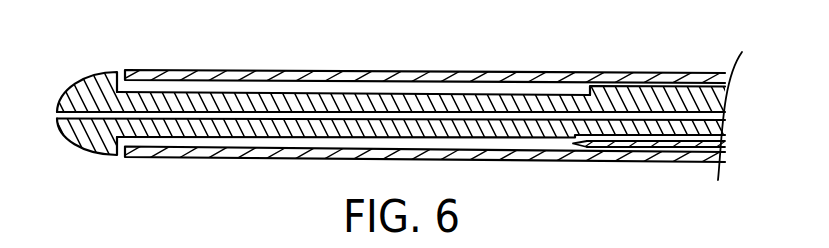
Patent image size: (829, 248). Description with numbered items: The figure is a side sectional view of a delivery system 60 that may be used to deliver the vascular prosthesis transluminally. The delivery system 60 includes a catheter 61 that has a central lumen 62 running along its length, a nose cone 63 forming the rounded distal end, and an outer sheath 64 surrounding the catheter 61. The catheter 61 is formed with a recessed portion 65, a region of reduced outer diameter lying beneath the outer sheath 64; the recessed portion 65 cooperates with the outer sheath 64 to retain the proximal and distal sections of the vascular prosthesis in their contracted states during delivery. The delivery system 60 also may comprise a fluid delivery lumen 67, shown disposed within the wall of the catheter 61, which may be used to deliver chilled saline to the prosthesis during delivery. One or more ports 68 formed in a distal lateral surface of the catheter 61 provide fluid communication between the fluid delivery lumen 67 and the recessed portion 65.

The delivery system 60 is at (434, 48).
The catheter 61 is at (639, 102).
The central lumen 62 is at (721, 115).
The nose cone 63 is at (77, 94).
The outer sheath 64 is at (548, 71).
The recessed portion 65 is at (239, 92).
The fluid delivery lumen 67 is at (740, 140).
The port 68 is at (574, 143).